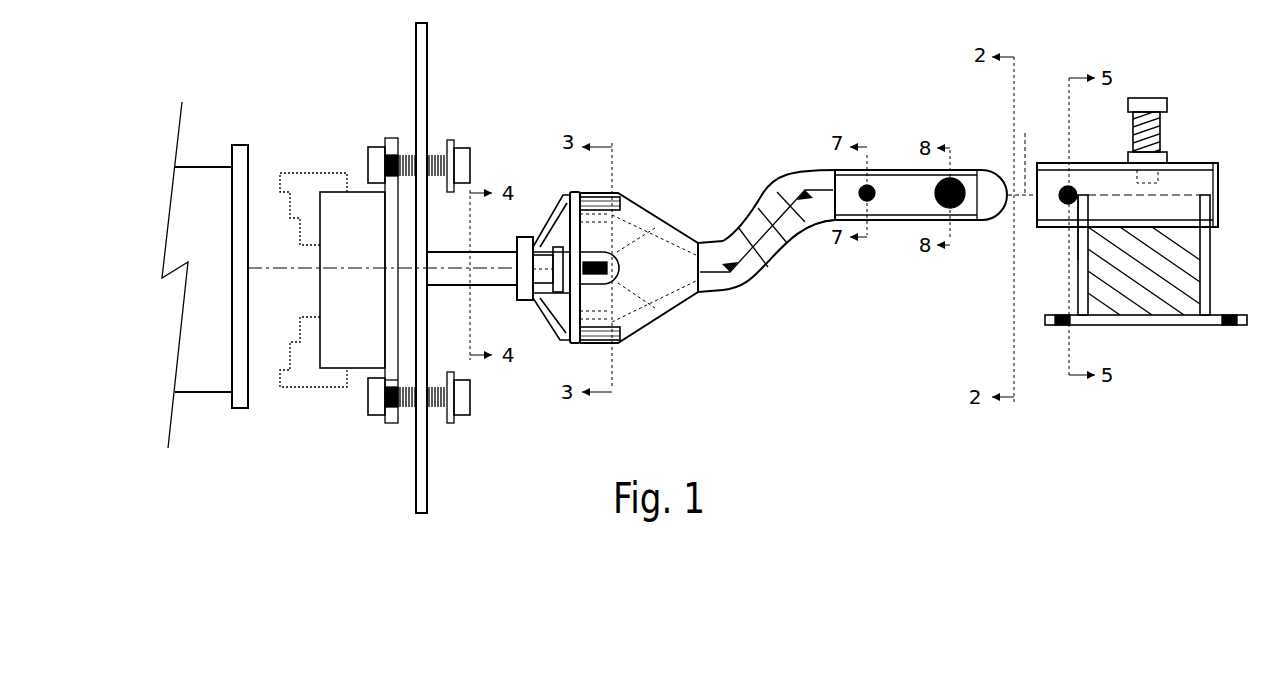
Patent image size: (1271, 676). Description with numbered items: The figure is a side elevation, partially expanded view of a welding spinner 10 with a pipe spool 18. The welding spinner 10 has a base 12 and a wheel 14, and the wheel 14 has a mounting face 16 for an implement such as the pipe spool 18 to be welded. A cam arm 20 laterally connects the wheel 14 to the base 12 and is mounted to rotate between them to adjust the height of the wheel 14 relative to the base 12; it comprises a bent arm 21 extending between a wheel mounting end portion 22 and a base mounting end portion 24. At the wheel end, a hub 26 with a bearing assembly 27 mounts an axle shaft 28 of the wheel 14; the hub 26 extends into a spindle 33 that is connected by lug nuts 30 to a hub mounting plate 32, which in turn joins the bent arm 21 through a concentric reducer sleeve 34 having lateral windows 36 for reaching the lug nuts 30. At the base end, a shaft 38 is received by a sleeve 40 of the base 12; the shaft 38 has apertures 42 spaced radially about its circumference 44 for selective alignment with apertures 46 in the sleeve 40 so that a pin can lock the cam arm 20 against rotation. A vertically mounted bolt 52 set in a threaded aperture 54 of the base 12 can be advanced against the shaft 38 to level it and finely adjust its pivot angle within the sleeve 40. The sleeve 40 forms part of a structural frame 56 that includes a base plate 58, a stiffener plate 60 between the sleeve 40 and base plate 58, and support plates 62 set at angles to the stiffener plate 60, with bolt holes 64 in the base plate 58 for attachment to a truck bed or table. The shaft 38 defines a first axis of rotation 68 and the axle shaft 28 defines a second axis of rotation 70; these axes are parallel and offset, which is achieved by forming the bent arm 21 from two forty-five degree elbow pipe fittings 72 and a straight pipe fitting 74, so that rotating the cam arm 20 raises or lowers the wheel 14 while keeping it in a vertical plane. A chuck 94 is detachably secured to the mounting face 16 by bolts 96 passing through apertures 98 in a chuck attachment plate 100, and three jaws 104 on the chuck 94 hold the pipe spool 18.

The welding spinner 10 is at (1198, 58).
The base 12 is at (390, 128).
The wheel 14 is at (427, 80).
The mounting face 16 is at (416, 45).
The pipe spool 18 is at (202, 167).
The cam arm 20 is at (755, 165).
The bent arm 21 is at (742, 220).
The wheel mounting end portion 22 is at (540, 190).
The base mounting end portion 24 is at (982, 152).
The hub 26 is at (530, 238).
The bearing assembly 27 is at (530, 300).
The axle shaft 28 is at (487, 252).
The lug nuts 30 is at (633, 213).
The hub mounting plate 32 is at (570, 192).
The spindle 33 is at (556, 325).
The concentric reducer sleeve 34 is at (650, 308).
The lateral windows 36 is at (588, 197).
The shaft 38 is at (893, 170).
The sleeve 40 is at (1180, 163).
The apertures 42 is at (868, 220).
The circumference 44 is at (877, 186).
The apertures 46 is at (1058, 205).
The bolt 52 is at (1132, 98).
The threaded aperture 54 is at (1132, 170).
The structural frame 56 is at (1067, 285).
The base plate 58 is at (1045, 315).
The stiffener plate 60 is at (1160, 303).
The support plates 62 is at (1072, 257).
The bolt holes 64 is at (1230, 315).
The first axis of rotation 68 is at (1025, 150).
The second axis of rotation 70 is at (520, 273).
The forty five degree elbow pipe fittings 72 is at (815, 226).
The straight pipe fitting 74 is at (783, 257).
The chuck 94 is at (355, 370).
The bolts 96 is at (450, 140).
The apertures 98 is at (398, 138).
The chuck attachment plate 100 is at (400, 380).
The jaws 104 is at (307, 173).